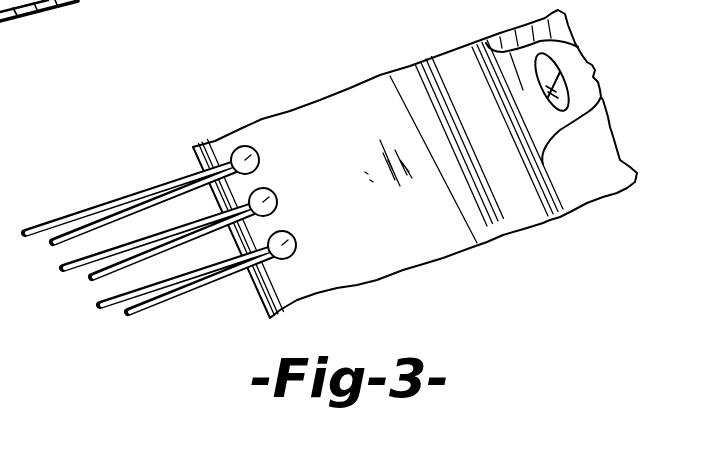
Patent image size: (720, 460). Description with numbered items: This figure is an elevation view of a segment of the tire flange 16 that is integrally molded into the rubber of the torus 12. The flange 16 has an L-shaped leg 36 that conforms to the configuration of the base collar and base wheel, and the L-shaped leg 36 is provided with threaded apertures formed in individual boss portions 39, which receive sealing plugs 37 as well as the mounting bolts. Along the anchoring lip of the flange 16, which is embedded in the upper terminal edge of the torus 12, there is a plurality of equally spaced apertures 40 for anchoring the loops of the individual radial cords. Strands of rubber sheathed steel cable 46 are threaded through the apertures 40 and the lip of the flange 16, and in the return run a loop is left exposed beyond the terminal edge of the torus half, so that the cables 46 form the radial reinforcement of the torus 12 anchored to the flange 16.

The torus 12 is at (13, 17).
The flange 16 is at (597, 137).
The L-shaped leg 36 is at (437, 72).
The sealing plug 37 is at (560, 72).
The boss portion 39 is at (562, 48).
The aperture 40 is at (266, 188).
The strand of rubber sheathed steel cable 46 is at (76, 2).